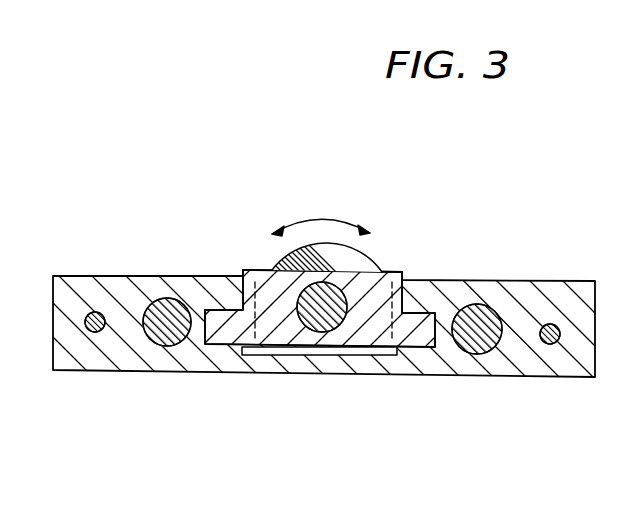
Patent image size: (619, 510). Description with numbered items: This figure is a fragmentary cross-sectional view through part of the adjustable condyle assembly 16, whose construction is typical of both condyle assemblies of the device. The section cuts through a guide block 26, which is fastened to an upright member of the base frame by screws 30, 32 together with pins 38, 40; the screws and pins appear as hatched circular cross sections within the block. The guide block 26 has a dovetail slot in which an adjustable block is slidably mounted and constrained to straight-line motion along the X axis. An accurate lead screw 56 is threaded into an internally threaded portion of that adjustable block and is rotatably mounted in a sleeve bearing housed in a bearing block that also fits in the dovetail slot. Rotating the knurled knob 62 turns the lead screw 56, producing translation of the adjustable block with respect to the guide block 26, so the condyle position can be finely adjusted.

The adjustable condyle assembly 16 is at (230, 397).
The guide block 26 is at (339, 374).
The screw 30 is at (168, 298).
The screw 32 is at (494, 312).
The pin 38 is at (93, 312).
The pin 40 is at (552, 324).
The lead screw 56 is at (385, 271).
The knurled knob 62 is at (365, 256).